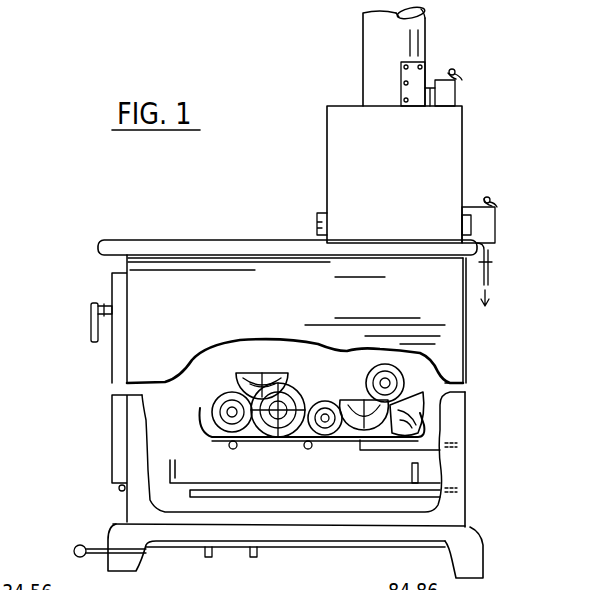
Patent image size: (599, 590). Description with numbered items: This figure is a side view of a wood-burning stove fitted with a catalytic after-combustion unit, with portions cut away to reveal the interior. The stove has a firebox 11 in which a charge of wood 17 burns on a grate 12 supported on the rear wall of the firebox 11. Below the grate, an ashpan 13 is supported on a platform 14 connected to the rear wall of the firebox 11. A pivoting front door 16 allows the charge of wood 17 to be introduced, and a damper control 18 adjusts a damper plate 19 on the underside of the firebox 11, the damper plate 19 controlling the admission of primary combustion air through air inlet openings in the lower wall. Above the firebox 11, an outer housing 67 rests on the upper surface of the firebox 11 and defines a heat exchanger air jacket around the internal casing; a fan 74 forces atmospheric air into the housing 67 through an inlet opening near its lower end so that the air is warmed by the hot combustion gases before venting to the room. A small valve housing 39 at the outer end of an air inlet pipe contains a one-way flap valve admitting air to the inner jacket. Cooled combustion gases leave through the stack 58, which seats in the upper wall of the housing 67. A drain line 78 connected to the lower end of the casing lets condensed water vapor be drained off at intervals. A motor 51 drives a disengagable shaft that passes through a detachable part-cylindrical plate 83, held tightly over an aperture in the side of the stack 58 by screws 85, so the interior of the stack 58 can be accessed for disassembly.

The firebox 11 is at (180, 284).
The grate 12 is at (203, 431).
The ashpan 13 is at (172, 463).
The platform 14 is at (200, 497).
The pivoting front door 16 is at (112, 353).
The charge of wood 17 is at (240, 378).
The damper control 18 is at (88, 546).
The damper plate 19 is at (370, 548).
The valve housing 39 is at (317, 225).
The motor 51 is at (456, 93).
The stack 58 is at (426, 27).
The outer housing 67 is at (456, 141).
The fan 74 is at (496, 219).
The drain line 78 is at (489, 272).
The part-cylindrical plate 83 is at (420, 76).
The screws 85 is at (404, 100).